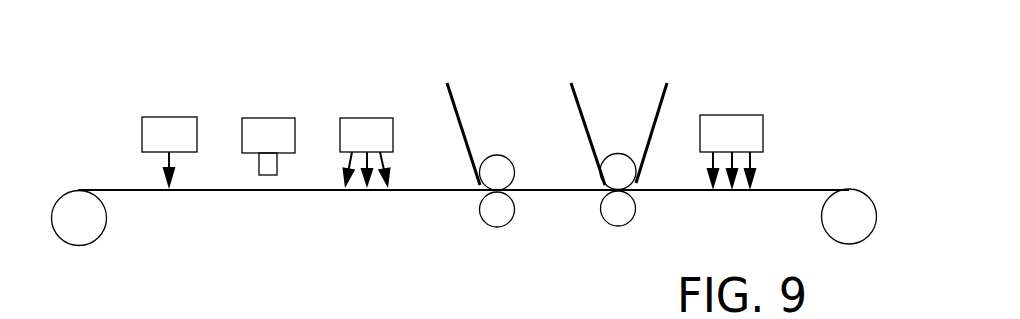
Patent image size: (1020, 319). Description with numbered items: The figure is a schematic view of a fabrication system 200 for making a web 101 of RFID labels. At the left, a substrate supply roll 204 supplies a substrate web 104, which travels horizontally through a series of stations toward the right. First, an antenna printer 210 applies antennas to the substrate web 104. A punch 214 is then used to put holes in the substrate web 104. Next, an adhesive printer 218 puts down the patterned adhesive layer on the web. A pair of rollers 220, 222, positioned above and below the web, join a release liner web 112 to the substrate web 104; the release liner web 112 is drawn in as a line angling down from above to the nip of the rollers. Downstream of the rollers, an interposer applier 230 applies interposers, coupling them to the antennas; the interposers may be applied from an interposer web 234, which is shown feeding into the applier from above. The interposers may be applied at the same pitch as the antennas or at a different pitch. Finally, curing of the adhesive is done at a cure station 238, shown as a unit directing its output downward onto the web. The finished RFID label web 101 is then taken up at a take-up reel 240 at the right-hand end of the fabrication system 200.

The fabrication system 200 is at (150, 75).
The web of RFID labels 101 is at (796, 187).
The substrate web 104 is at (125, 192).
The substrate supply roll 204 is at (87, 233).
The take-up reel 240 is at (825, 220).
The antenna printer 210 is at (142, 118).
The punch 214 is at (242, 117).
The adhesive printer 218 is at (368, 117).
The release liner web 112 is at (452, 95).
The roller 220 is at (500, 156).
The roller 222 is at (482, 222).
The interposer web 234 is at (578, 95).
The interposer applier 230 is at (629, 145).
The cure station 238 is at (737, 115).